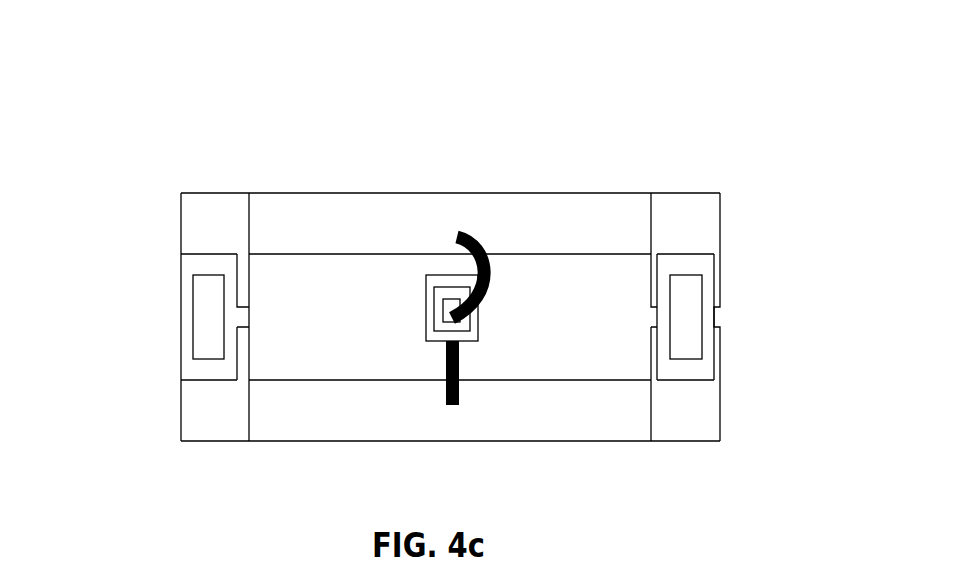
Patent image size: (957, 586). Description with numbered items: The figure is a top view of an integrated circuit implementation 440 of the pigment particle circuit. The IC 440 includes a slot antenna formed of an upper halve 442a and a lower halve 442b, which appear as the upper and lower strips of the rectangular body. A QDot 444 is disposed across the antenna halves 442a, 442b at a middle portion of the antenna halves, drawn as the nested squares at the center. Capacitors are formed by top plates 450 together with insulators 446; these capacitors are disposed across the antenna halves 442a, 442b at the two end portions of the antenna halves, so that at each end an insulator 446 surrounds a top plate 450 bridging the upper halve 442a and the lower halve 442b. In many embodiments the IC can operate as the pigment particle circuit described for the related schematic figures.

The integrated circuit implementation 440 is at (682, 89).
The upper halve of slot antenna 442a is at (709, 190).
The lower halve of slot antenna 442b is at (703, 442).
The QDot 444 is at (480, 325).
The insulator 446 is at (190, 267).
The top plate 450 is at (190, 307).